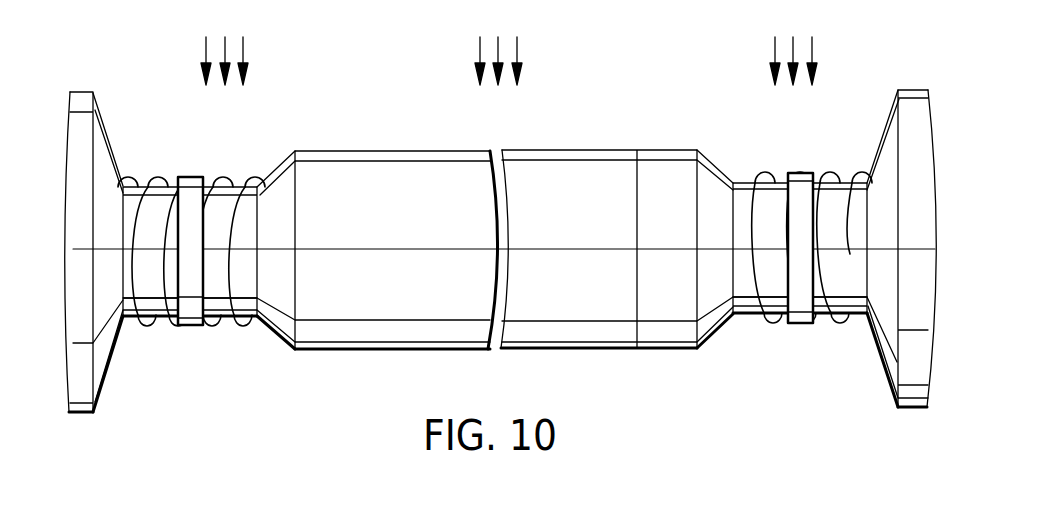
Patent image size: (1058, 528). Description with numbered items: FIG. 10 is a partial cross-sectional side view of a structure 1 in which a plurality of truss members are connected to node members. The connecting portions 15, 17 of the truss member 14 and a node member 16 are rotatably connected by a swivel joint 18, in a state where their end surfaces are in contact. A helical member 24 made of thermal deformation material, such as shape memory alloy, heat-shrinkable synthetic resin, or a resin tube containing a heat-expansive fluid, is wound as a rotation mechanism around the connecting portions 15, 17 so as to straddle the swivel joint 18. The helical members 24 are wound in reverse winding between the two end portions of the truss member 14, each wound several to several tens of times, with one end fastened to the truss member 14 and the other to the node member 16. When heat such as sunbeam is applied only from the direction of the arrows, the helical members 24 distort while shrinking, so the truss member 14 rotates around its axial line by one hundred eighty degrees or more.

The pipe assembly 1 is at (581, 124).
The truss member 14 is at (428, 151).
The connecting portion 15 is at (243, 307).
The node member 16 is at (103, 123).
The connecting portion 17 is at (148, 307).
The swivel joint 18 is at (192, 183).
The helical member 24 is at (162, 176).